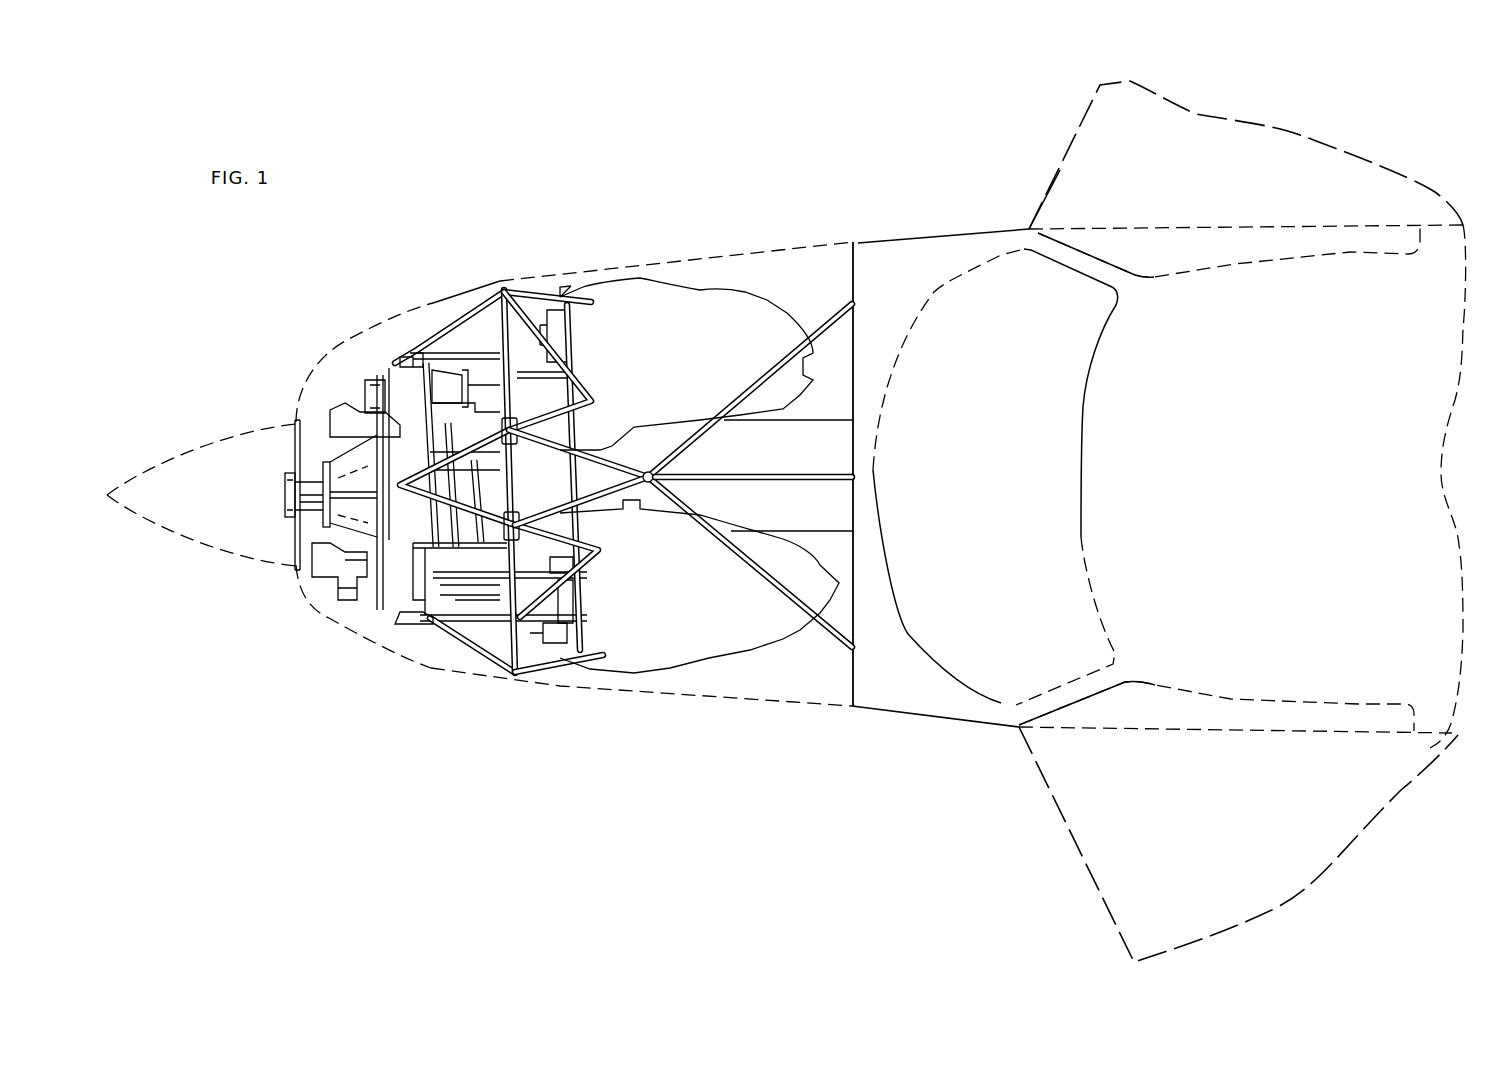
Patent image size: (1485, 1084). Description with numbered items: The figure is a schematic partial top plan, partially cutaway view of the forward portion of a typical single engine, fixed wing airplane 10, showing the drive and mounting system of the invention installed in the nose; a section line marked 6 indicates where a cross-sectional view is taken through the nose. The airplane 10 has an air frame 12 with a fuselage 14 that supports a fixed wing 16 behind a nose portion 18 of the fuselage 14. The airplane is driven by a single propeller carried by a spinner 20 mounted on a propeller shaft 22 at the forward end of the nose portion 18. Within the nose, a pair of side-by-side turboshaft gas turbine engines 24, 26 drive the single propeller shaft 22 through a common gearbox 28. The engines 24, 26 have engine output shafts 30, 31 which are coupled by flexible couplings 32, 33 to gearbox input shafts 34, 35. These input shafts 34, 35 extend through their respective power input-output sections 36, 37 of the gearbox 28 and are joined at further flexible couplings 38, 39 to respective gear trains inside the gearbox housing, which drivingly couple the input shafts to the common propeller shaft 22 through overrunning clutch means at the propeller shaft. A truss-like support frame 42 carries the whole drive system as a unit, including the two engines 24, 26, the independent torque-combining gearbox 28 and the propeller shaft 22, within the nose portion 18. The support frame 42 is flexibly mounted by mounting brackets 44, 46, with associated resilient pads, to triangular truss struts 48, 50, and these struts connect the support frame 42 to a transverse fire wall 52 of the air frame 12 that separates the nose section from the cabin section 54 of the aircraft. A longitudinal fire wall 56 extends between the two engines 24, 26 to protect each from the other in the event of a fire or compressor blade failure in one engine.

The section line 6- 6 is at (300, 304).
The airplane 10 is at (1072, 120).
The air frame 12 is at (918, 220).
The fuselage 14 is at (1179, 222).
The fixed wing 16 is at (1050, 187).
The nose portion 18 is at (657, 258).
The spinner 20 is at (233, 434).
The propeller shaft 22 is at (313, 477).
The turboshaft gas turbine engine 24 is at (686, 364).
The turboshaft gas turbine engine 26 is at (699, 586).
The gearbox 28 is at (383, 373).
The engine output shaft 30 is at (570, 382).
The engine output shaft 31 is at (587, 581).
The flexible coupling 32 is at (567, 355).
The flexible coupling 33 is at (581, 615).
The gearbox input shaft 34 is at (470, 383).
The gearbox input shaft 35 is at (467, 587).
The power input-output section 36 is at (405, 377).
The power input-output section 37 is at (403, 592).
The flexible coupling 38 is at (370, 380).
The flexible coupling 39 is at (340, 602).
The support frame 42 is at (503, 276).
The mounting bracket 44 is at (575, 430).
The mounting bracket 46 is at (540, 517).
The triangular truss strut 48 is at (623, 490).
The triangular truss strut 50 is at (701, 505).
The transverse fire wall 52 is at (853, 277).
The cabin section 54 is at (969, 325).
The longitudinal fire wall 56 is at (757, 474).